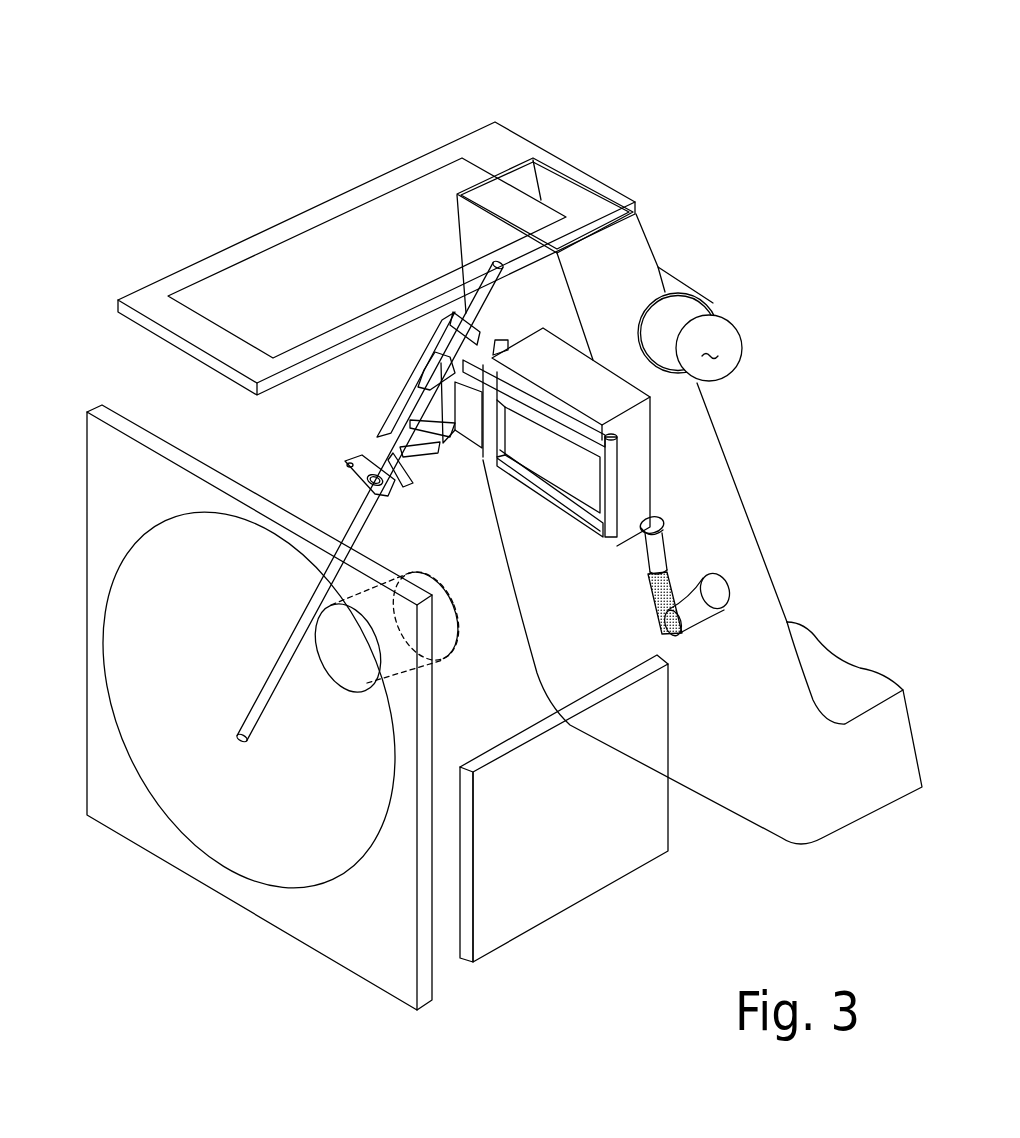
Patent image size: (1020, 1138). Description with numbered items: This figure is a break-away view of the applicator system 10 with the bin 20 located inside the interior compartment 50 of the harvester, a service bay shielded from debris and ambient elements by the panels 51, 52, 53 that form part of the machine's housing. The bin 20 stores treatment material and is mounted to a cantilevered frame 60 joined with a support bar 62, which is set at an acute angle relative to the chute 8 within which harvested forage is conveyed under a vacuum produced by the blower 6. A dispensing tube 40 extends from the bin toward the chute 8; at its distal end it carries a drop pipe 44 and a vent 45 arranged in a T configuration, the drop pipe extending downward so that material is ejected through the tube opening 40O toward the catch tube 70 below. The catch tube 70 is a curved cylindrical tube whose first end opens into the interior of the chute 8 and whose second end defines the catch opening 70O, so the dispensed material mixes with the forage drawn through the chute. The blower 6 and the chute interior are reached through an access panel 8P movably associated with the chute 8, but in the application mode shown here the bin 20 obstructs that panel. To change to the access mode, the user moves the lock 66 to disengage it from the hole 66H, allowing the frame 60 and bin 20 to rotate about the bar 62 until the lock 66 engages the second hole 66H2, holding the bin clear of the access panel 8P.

The applicator system 10 is at (770, 127).
The panel 51 is at (290, 235).
The chute 8 is at (630, 243).
The blower 6 is at (717, 290).
The access panel 8P is at (502, 342).
The bin 20 is at (582, 396).
The frame 60 is at (470, 463).
The support bar 62 is at (364, 527).
The lock 66 is at (421, 452).
The hole 66H is at (405, 478).
The second hole 66H2 is at (360, 478).
The panel 52 is at (117, 508).
The interior compartment 50 is at (525, 699).
The panel 53 is at (508, 905).
The dispensing tube 40 is at (735, 544).
The vent 45 is at (657, 518).
The drop pipe 44 is at (670, 548).
The nozzle outlet 40O is at (670, 566).
The catch tube 70 is at (705, 670).
The catch opening 70O is at (678, 636).